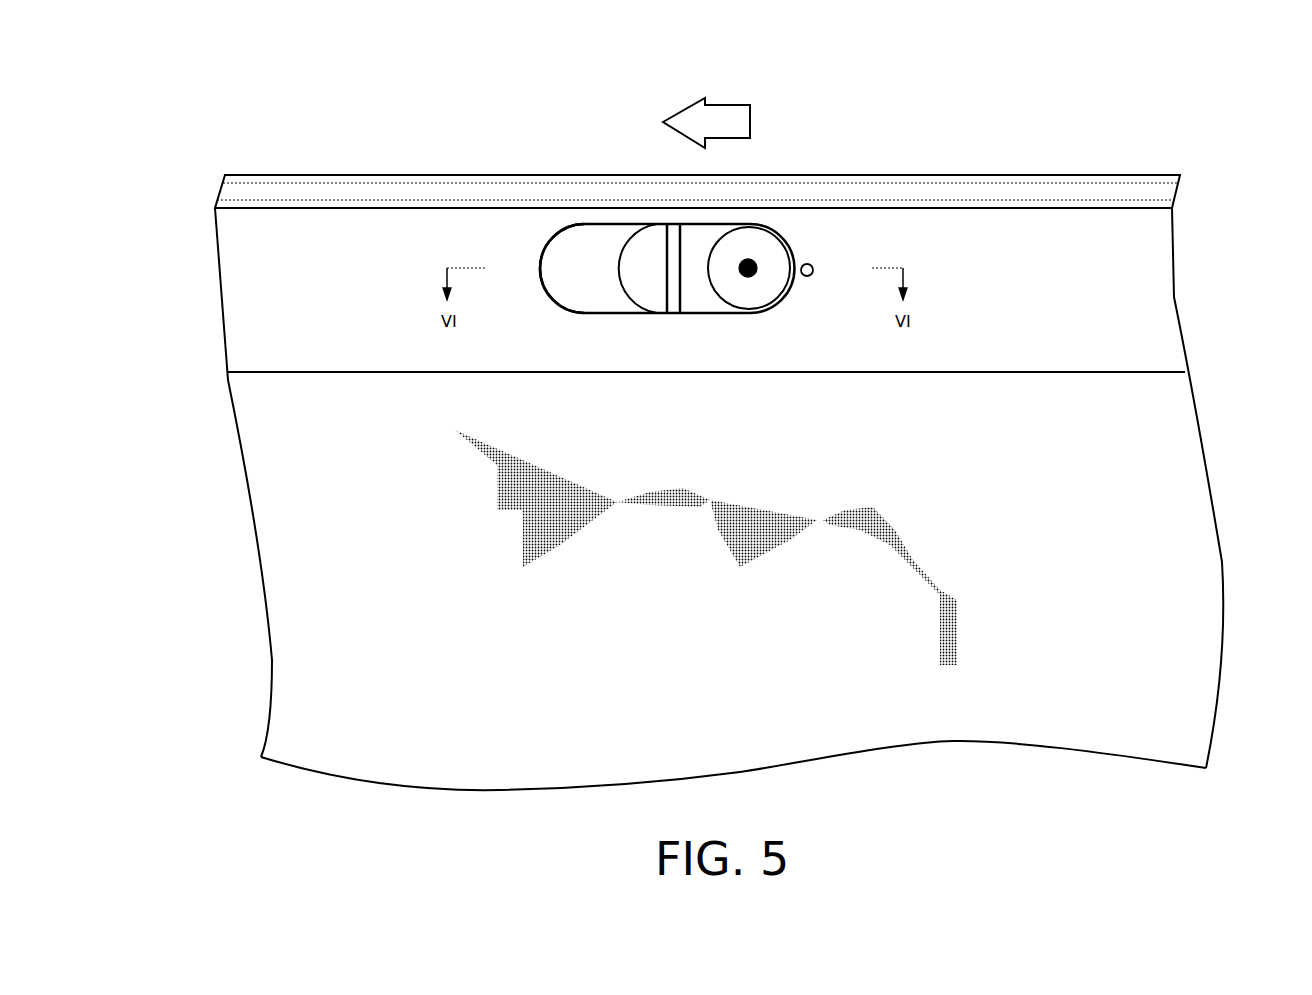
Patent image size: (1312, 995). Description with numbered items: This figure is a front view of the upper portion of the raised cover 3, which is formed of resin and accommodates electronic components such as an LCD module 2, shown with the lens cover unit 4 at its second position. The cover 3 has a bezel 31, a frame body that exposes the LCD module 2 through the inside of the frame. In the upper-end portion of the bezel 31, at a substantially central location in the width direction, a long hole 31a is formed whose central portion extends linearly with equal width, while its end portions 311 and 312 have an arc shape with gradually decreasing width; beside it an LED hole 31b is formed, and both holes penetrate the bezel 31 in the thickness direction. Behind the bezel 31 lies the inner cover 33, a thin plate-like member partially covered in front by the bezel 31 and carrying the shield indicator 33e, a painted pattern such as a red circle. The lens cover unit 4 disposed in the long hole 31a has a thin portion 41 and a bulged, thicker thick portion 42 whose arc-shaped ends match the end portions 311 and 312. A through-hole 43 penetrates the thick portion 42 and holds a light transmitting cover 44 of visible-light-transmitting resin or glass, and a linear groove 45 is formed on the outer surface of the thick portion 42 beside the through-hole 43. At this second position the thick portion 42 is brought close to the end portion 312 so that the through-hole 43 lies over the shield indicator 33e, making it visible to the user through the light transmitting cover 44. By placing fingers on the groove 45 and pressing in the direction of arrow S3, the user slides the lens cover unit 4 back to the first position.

The LCD module 2 is at (1190, 550).
The cover 3 is at (226, 141).
The bezel 31 is at (1125, 297).
The end portion of the long hole 311 is at (548, 285).
The end portion of the long hole 312 is at (787, 258).
The long hole 31a is at (600, 230).
The LED hole 31b is at (812, 263).
The inner cover 33 is at (1160, 192).
The shield indicator 33e is at (746, 258).
The lens cover unit 4 is at (795, 285).
The thin portion 41 is at (597, 280).
The thick portion 42 is at (653, 313).
The through-hole 43 is at (722, 302).
The light transmitting cover 44 is at (765, 288).
The groove 45 is at (672, 225).
The arrow S3 is at (730, 100).